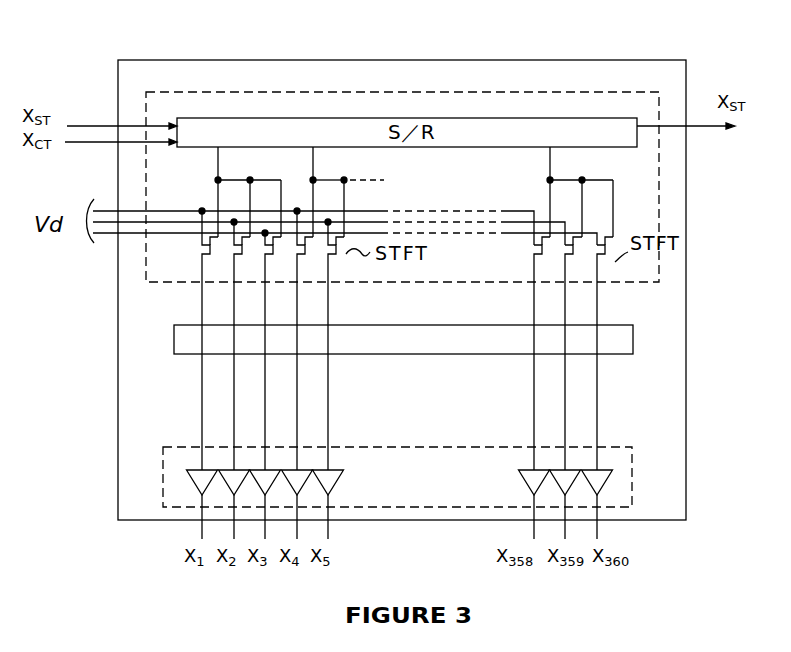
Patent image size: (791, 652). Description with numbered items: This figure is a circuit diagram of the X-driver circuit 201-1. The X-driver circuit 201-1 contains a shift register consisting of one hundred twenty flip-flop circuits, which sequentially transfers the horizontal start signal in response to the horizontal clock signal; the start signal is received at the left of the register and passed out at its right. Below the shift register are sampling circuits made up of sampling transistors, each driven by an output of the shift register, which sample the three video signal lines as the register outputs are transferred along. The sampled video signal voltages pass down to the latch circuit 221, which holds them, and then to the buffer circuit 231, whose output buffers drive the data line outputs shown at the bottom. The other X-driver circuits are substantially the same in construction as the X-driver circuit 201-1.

The X-driver circuit 201-1 is at (525, 61).
The latch circuit 221 is at (618, 341).
The buffer circuit 231 is at (607, 448).